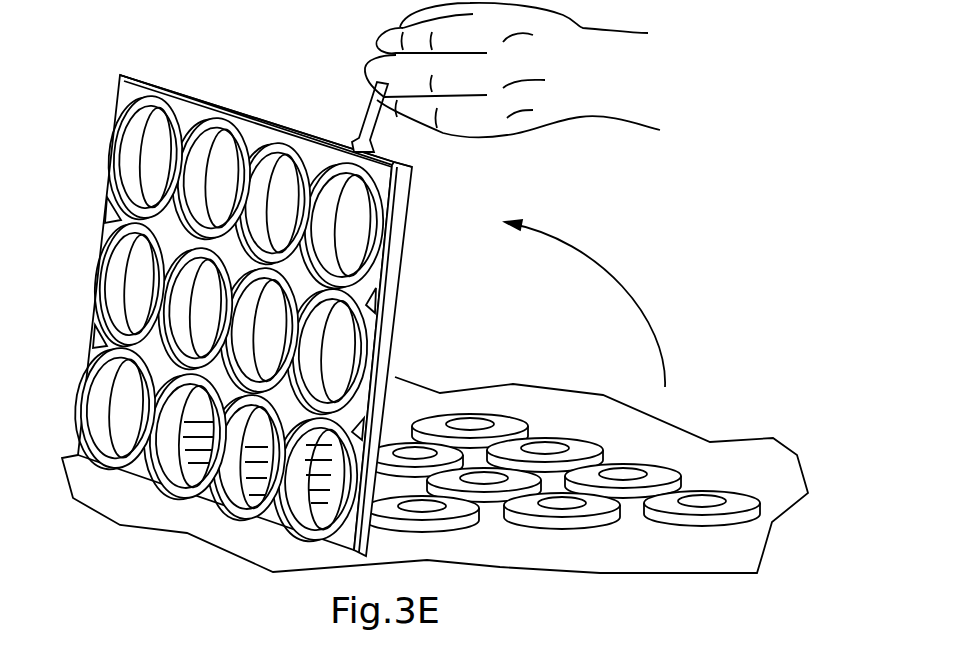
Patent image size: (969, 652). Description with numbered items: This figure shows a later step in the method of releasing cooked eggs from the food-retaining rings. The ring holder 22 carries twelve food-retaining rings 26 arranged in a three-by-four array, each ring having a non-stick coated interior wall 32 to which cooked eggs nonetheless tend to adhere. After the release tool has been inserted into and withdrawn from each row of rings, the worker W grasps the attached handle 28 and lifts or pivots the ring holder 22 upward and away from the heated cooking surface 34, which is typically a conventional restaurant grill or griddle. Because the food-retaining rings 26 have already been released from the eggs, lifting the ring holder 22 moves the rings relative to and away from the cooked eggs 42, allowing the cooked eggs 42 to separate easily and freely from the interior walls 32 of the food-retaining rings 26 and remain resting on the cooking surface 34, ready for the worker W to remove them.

The ring holder 22 is at (123, 88).
The food-retaining rings 26 is at (170, 106).
The handle 28 is at (366, 122).
The interior walls 32 is at (132, 147).
The cooking surface 34 is at (737, 448).
The cooked eggs 42 is at (600, 531).
The worker W is at (587, 78).